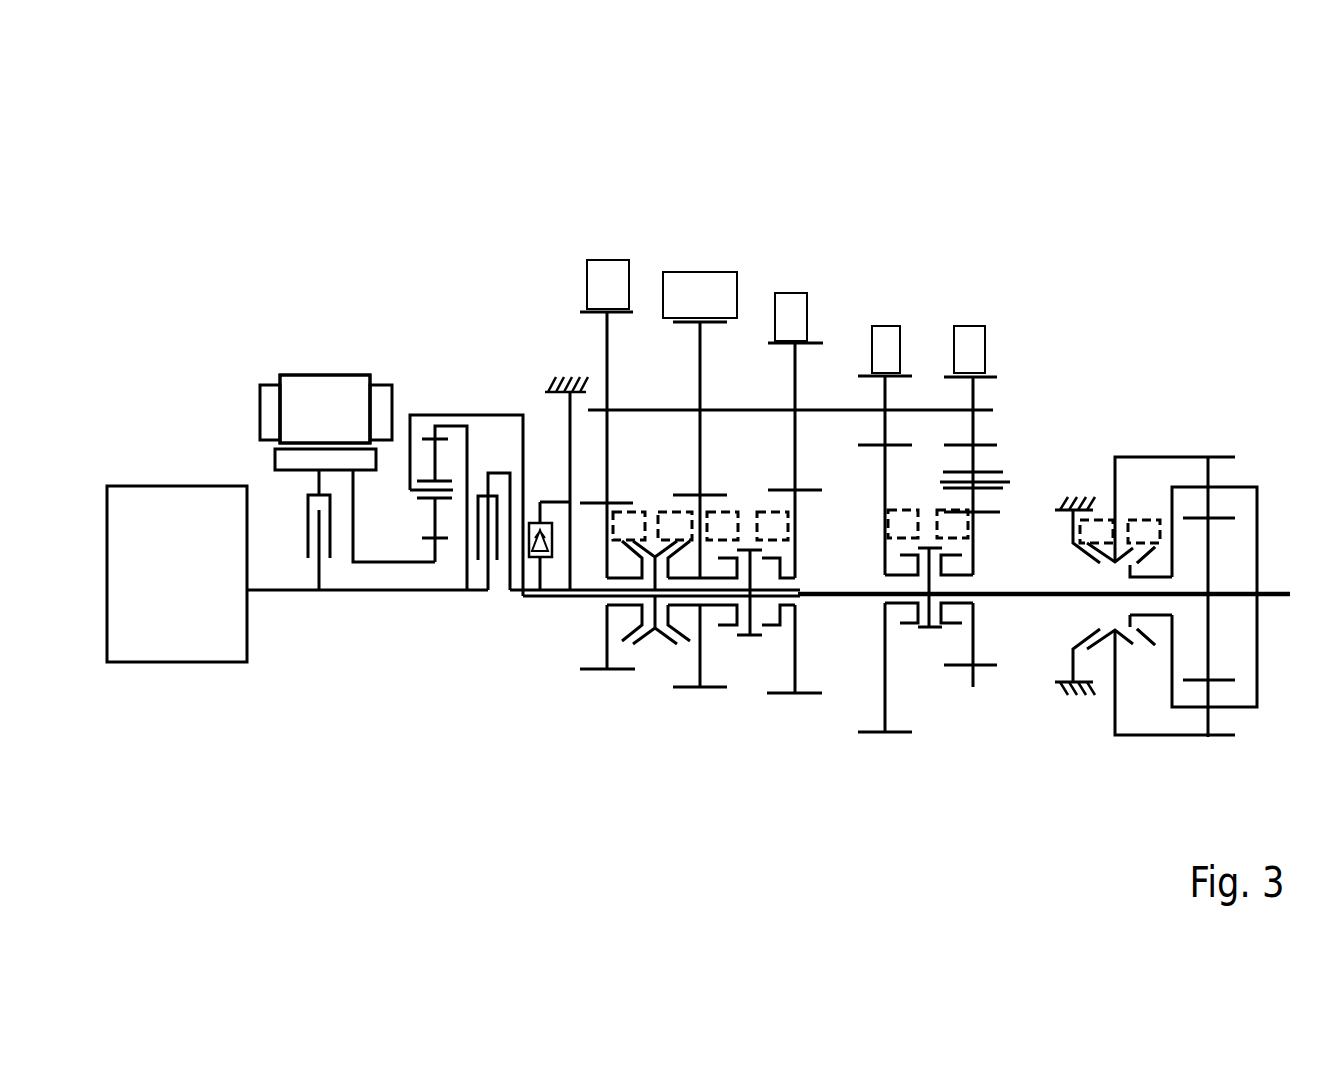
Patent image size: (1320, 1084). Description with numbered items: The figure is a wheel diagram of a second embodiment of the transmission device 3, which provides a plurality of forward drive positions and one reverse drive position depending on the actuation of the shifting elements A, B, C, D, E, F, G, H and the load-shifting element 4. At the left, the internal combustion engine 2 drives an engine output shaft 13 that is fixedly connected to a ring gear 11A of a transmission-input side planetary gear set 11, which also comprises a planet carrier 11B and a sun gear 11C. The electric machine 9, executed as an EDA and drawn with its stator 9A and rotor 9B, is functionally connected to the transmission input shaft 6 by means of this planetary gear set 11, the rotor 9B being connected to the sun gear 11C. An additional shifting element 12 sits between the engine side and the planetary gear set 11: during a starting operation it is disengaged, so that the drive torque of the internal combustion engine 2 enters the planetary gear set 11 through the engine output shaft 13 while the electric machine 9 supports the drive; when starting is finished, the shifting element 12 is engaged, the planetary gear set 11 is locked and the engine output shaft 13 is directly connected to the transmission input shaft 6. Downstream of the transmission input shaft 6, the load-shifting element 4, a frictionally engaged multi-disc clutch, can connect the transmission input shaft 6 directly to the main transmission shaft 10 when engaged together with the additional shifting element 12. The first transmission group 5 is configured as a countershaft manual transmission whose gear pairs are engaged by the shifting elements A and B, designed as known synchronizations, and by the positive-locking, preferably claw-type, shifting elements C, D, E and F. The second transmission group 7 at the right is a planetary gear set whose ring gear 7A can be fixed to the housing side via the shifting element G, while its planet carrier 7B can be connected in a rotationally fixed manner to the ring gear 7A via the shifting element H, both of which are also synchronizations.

The internal combustion engine 2 is at (172, 642).
The transmission device 3 is at (440, 252).
The load-shifting element 4 is at (496, 583).
The first transmission group 5 is at (789, 270).
The transmission input shaft 6 is at (493, 415).
The second transmission group 7 is at (1161, 515).
The ring gear 7A is at (1168, 455).
The planet carrier 7B is at (1242, 485).
The electric machine 9 is at (328, 346).
The stator 9A is at (300, 393).
The rotor 9B is at (285, 458).
The main transmission shaft 10 is at (845, 598).
The planetary gear set 11 is at (426, 509).
The ring gear 11A is at (447, 426).
The planet carrier 11B is at (408, 486).
The sun gear 11C is at (378, 563).
The additional shifting element 12 is at (295, 550).
The engine output shaft 13 is at (265, 590).
The shifting element A is at (627, 640).
The shifting element B is at (682, 640).
The shifting element C is at (725, 630).
The shifting element D is at (773, 632).
The shifting element E is at (913, 630).
The shifting element F is at (962, 630).
The shifting element G is at (1097, 645).
The shifting element H is at (1137, 640).